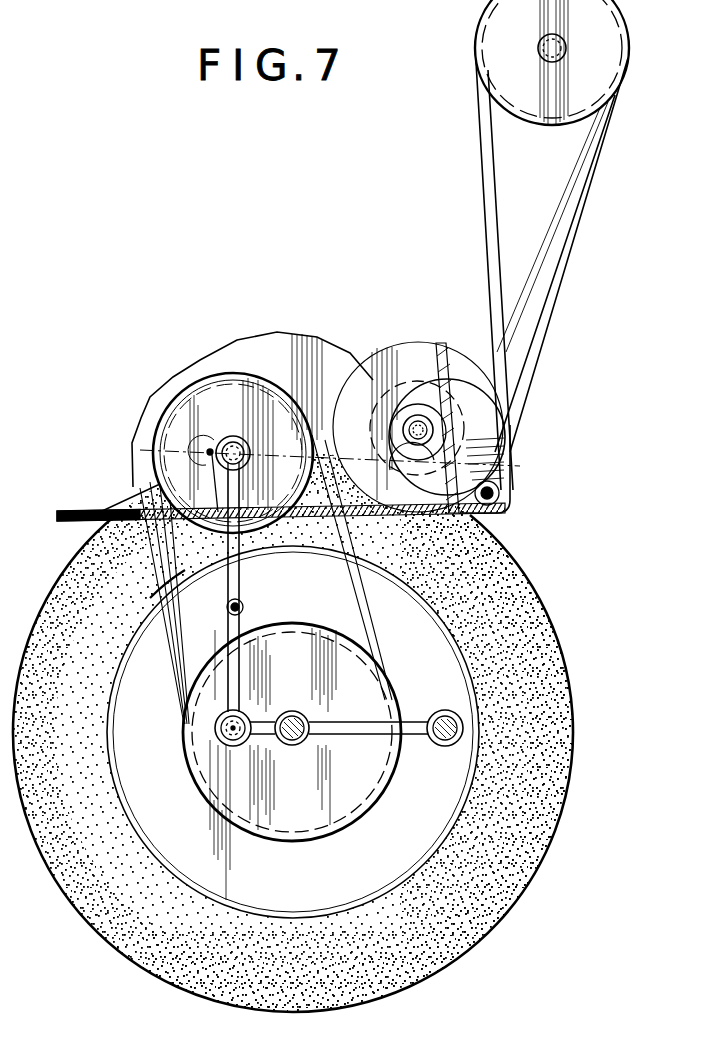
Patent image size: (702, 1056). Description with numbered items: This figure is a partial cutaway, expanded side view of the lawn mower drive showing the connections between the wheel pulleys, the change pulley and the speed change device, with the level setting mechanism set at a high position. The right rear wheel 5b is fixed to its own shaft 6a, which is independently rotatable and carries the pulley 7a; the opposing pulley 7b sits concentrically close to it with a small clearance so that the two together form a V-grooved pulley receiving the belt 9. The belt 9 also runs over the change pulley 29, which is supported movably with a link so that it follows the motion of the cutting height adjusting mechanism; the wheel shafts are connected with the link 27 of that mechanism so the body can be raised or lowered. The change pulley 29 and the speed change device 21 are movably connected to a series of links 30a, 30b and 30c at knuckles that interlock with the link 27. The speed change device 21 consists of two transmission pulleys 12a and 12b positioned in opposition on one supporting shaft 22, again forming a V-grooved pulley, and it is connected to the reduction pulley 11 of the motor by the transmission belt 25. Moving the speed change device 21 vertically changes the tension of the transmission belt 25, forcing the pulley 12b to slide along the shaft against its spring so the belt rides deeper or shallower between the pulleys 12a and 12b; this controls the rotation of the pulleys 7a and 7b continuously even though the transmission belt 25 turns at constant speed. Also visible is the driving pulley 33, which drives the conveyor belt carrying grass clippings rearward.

The right rear wheel 5b is at (558, 846).
The belt 9 is at (168, 580).
The pulley 7a is at (340, 812).
The pulley 7b is at (385, 785).
The link 27 is at (353, 724).
The shaft 6a is at (293, 745).
The link 30a is at (243, 580).
The reduction pulley 11 is at (63, 508).
The link 30b is at (328, 342).
The change pulley 29 is at (188, 420).
The transmission belt 25 is at (290, 514).
The transmission pulley 12a is at (402, 360).
The transmission pulley 12b is at (464, 364).
The supporting shaft 22 is at (404, 428).
The speed change device 21 is at (430, 338).
The link 30c is at (507, 464).
The driving pulley 33 is at (613, 30).